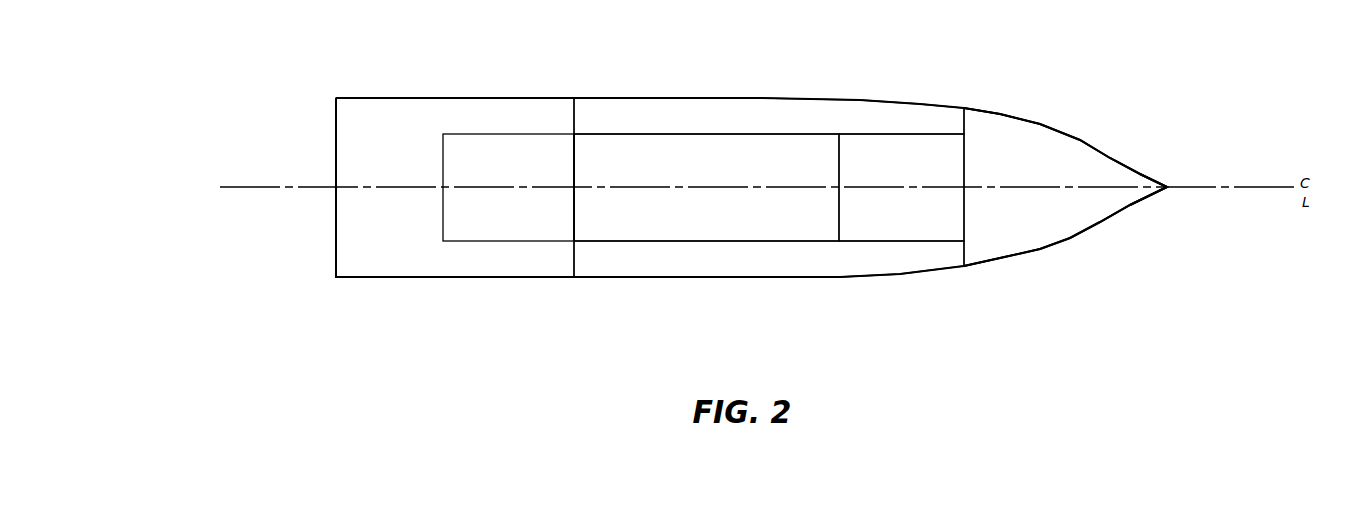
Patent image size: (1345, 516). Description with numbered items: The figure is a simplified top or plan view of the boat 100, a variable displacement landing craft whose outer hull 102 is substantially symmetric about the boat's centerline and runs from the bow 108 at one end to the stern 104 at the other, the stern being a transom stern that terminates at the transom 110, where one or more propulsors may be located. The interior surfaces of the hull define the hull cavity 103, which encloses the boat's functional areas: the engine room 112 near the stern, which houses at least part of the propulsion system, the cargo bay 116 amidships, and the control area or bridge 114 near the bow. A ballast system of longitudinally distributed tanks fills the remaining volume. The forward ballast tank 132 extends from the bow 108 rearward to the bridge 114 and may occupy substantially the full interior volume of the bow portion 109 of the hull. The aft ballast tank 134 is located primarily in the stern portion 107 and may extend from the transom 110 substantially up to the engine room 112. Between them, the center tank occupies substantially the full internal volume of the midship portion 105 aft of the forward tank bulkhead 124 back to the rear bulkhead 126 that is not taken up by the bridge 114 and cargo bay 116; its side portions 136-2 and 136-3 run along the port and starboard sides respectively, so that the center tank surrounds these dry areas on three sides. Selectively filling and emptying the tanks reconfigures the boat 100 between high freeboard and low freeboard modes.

The boat 100 is at (1074, 82).
The outer hull 102 is at (979, 109).
The hull cavity 103 is at (373, 110).
The stern 104 is at (343, 288).
The midship portion 105 is at (655, 279).
The stern portion 107 is at (402, 281).
The bow 108 is at (1179, 177).
The bow portion 109 is at (1064, 244).
The transom 110 is at (335, 205).
The engine room 112 is at (492, 178).
The bridge 114 is at (887, 178).
The cargo bay 116 is at (689, 178).
The forward tank bulkhead 124 is at (963, 126).
The rear bulkhead 126 is at (576, 117).
The forward ballast tank 132 is at (1024, 178).
The aft ballast tank 134 is at (380, 178).
The side portion of center tank 136-2 is at (765, 128).
The side portion of center tank 136-3 is at (765, 273).